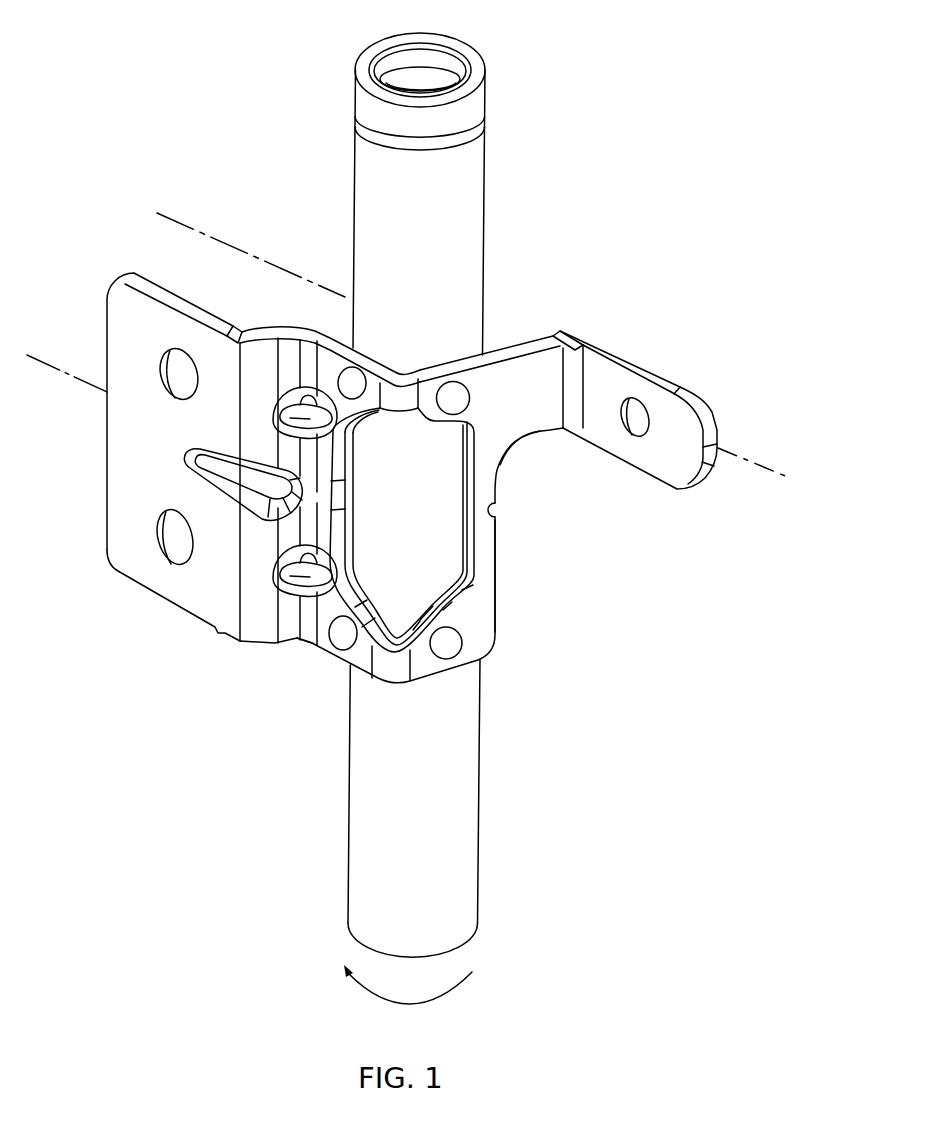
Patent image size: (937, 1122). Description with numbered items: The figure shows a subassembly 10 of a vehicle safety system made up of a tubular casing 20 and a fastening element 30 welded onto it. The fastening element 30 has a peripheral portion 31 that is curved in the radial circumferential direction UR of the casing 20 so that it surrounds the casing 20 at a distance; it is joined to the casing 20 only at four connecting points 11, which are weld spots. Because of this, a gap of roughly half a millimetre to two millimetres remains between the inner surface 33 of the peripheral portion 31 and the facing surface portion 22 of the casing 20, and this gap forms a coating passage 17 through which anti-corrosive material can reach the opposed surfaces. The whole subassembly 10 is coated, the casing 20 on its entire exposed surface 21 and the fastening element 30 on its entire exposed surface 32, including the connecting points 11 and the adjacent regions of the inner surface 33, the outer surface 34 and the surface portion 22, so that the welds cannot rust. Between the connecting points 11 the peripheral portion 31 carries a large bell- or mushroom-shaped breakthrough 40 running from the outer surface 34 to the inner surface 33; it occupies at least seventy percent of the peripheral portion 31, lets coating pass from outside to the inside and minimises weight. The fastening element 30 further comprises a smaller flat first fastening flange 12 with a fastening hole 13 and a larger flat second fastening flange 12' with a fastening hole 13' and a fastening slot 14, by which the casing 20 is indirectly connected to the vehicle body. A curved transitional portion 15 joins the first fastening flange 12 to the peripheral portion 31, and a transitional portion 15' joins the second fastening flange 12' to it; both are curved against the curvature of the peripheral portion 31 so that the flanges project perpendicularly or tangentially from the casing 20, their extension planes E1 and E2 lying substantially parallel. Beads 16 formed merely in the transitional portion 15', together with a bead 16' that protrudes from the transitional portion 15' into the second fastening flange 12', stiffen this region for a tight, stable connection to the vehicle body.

The subassembly 10 is at (600, 56).
The tubular casing 20 is at (485, 160).
The exposed surface 21 is at (478, 858).
The fastening element 30 is at (487, 643).
The exposed surface 32 is at (527, 432).
The outer surface 34 is at (483, 543).
The inner surface 33 is at (386, 352).
The coating passage 17 is at (413, 352).
The peripheral portion 31 is at (432, 363).
The connecting points 11 is at (352, 372).
The breakthrough 40 is at (458, 584).
The surface portion 22 is at (355, 607).
The second fastening flange 12' is at (158, 448).
The fastening hole 13' is at (132, 371).
The fastening slot 14 is at (160, 533).
The beads 16 is at (263, 529).
The bead 16' is at (221, 485).
The transitional portion 15' is at (311, 661).
The first fastening flange 12 is at (652, 410).
The fastening hole 13 is at (614, 436).
The transitional portion 15 is at (568, 319).
The extension plane E2 is at (75, 383).
The extension plane E1 is at (767, 470).
The radial circumferential direction UR is at (408, 984).